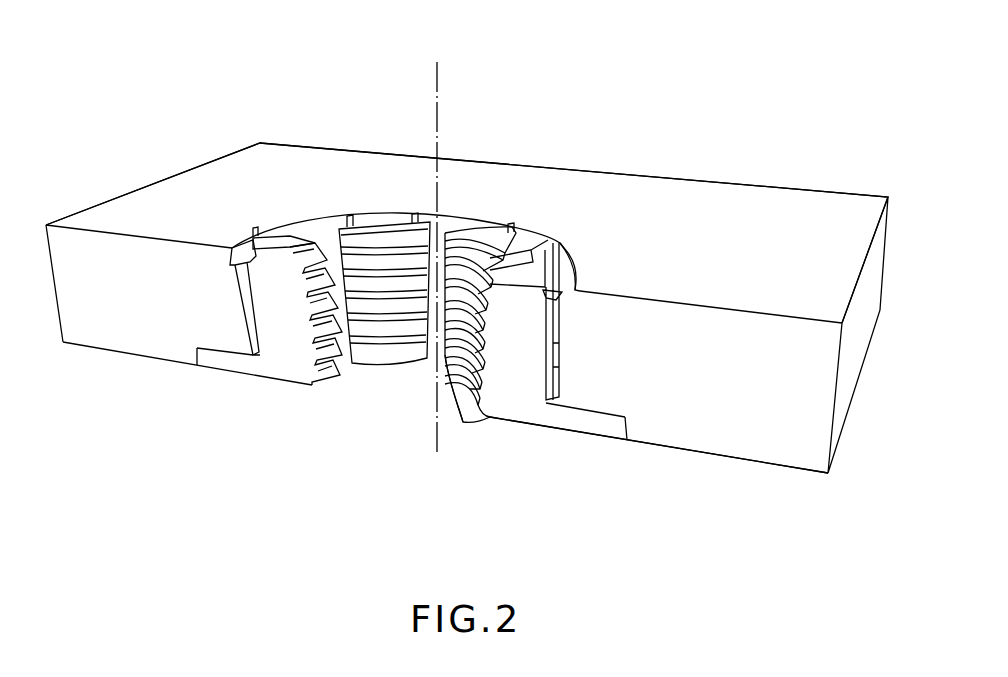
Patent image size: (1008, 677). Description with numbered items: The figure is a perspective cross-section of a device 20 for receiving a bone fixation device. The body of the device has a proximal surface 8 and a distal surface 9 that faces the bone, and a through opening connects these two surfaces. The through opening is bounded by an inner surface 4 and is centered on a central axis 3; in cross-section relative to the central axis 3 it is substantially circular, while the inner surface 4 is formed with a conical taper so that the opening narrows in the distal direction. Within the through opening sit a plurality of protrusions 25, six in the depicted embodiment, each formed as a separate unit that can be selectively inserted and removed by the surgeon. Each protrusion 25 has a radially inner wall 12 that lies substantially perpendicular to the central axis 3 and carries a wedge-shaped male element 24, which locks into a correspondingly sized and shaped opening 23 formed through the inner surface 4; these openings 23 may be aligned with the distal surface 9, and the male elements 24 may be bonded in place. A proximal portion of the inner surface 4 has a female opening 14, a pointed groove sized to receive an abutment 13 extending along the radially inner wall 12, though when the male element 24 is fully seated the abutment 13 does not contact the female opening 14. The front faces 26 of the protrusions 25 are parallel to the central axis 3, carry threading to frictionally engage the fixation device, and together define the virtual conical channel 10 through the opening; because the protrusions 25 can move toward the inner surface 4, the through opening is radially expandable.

The central axis 3 is at (437, 83).
The inner surface 4 is at (317, 227).
The proximal surface 8 is at (793, 210).
The distal surface 9 is at (723, 458).
The channel 10 is at (448, 227).
The radially inner wall 12 is at (545, 375).
The abutment 13 is at (566, 277).
The female opening 14 is at (578, 292).
The device 20 is at (242, 167).
The opening 23 is at (210, 345).
The wedge-shaped male element 24 is at (220, 360).
The protrusion 25 is at (525, 247).
The front face 26 is at (447, 367).